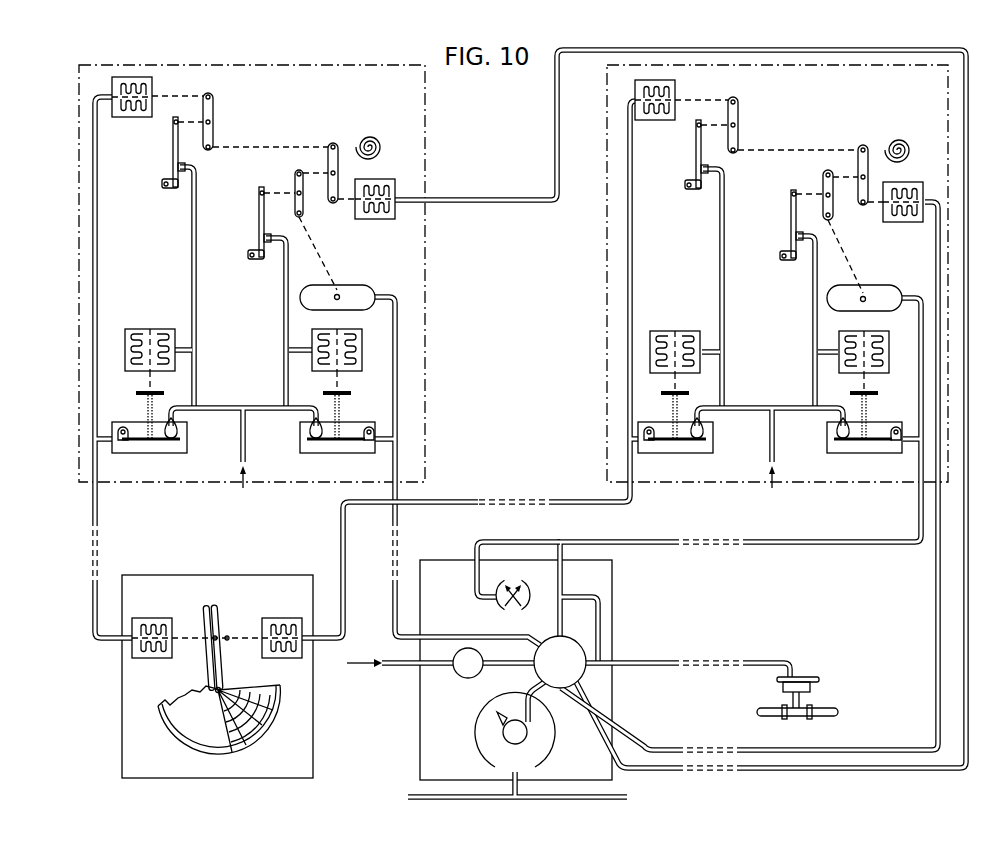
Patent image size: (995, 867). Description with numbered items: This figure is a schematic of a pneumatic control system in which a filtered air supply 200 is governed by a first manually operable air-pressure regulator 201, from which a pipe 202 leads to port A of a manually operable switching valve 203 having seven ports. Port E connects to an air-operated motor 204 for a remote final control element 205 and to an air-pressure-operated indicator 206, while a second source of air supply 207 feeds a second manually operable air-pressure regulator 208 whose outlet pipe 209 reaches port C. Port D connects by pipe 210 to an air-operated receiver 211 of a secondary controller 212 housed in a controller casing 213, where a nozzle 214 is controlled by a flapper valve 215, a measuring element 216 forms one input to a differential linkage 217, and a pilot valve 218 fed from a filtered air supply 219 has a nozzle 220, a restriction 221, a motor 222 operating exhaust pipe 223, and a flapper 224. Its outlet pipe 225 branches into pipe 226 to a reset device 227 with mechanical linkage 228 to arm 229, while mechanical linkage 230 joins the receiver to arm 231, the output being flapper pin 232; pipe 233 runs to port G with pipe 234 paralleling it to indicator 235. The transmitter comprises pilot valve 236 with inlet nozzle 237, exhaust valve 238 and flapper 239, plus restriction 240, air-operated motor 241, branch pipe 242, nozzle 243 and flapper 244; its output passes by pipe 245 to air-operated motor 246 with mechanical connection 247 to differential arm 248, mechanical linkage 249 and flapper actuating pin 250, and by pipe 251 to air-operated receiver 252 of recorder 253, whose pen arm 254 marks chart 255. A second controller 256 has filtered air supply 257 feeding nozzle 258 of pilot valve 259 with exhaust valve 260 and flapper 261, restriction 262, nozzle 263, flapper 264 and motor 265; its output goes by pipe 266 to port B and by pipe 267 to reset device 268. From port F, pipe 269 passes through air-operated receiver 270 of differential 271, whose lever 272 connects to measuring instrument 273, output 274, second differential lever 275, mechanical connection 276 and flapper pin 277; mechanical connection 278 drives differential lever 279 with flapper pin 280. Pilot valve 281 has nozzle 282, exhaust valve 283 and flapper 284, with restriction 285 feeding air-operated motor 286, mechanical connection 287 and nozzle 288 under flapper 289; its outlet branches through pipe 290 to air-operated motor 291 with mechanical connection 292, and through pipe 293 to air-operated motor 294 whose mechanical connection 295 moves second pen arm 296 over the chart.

The filtered air supply 200 is at (408, 662).
The first manually operable air-pressure regulator 201 is at (463, 653).
The pipe 202 is at (523, 650).
The switching valve 203 is at (572, 640).
The air-operated motor 204 is at (807, 677).
The final control element 205 is at (797, 723).
The air-pressure-operated indicator 206 is at (518, 585).
The second source of air supply 207 is at (512, 800).
The second manually operable air-pressure regulator 208 is at (507, 730).
The outlet pipe 209 is at (533, 690).
The pipe 210 is at (938, 245).
The air-operated receiver 211 is at (910, 182).
The secondary controller 212 is at (596, 262).
The controller casing 213 is at (607, 402).
The nozzle 214 is at (802, 242).
The flapper valve 215 is at (791, 210).
The measuring element 216 is at (897, 138).
The differential linkage 217 is at (847, 138).
The pilot valve 218 is at (873, 455).
The filtered air supply 219 is at (772, 443).
The nozzle 220 is at (836, 428).
The restriction 221 is at (813, 378).
The motor 222 is at (863, 328).
The exhaust pipe 223 is at (852, 403).
The flapper 224 is at (855, 442).
The outlet pipe 225 is at (913, 433).
The pipe 226 is at (920, 380).
The reset device 227 is at (882, 291).
The mechanical linkage 228 is at (855, 265).
The arm 229 is at (833, 205).
The mechanical linkage 230 is at (875, 205).
The arm 231 is at (869, 175).
The flapper pin 232 is at (807, 177).
The pipe 233 is at (662, 540).
The pipe 234 is at (522, 538).
The indicator 235 is at (500, 603).
The pilot valve 236 is at (670, 455).
The inlet nozzle 237 is at (704, 427).
The exhaust valve 238 is at (673, 407).
The flapper 239 is at (683, 442).
The restriction 240 is at (727, 380).
The air-operated motor 241 is at (682, 328).
The branch pipe 242 is at (725, 257).
The nozzle 243 is at (708, 174).
The flapper 244 is at (697, 150).
The pipe 245 is at (627, 355).
The air-operated motor 246 is at (670, 120).
The mechanical connection 247 is at (690, 98).
The differential arm 248 is at (740, 110).
The mechanical linkage 249 is at (753, 148).
The flapper actuating pin 250 is at (703, 128).
The pipe 251 is at (565, 500).
The air-operated receiver 252 is at (283, 617).
The recorder 253 is at (215, 568).
The pointer or pen arm 254 is at (224, 623).
The chart 255 is at (187, 727).
The second controller 256 is at (72, 247).
The filtered air supply 257 is at (245, 435).
The nozzle 258 is at (307, 423).
The pilot valve or relay 259 is at (340, 453).
The exhaust valve 260 is at (341, 403).
The flapper 261 is at (333, 453).
The restriction 262 is at (285, 378).
The nozzle 263 is at (270, 248).
The flapper 264 is at (259, 203).
The motor 265 is at (337, 328).
The pipe 266 is at (397, 468).
The pipe 267 is at (397, 355).
The reset device 268 is at (352, 280).
The pipe 269 is at (555, 100).
The air-operated receiver 270 is at (392, 178).
The differential 271 is at (315, 132).
The lever 272 is at (338, 182).
The measuring instrument 273 is at (362, 140).
The output 274 is at (318, 172).
The second differential lever 275 is at (305, 203).
The mechanical connection 276 is at (318, 251).
The flapper pin 277 is at (267, 187).
The mechanical connection 278 is at (262, 143).
The differential lever 279 is at (213, 100).
The flapper pin 280 is at (180, 126).
The pilot valve 281 is at (142, 455).
The nozzle 282 is at (178, 424).
The exhaust valve 283 is at (147, 405).
The flapper 284 is at (163, 442).
The restriction 285 is at (197, 380).
The air-operated motor 286 is at (142, 327).
The mechanical connection 287 is at (147, 380).
The nozzle 288 is at (183, 172).
The flapper 289 is at (172, 145).
The pipe 290 is at (93, 287).
The air-operated motor 291 is at (142, 117).
The mechanical connection 292 is at (180, 94).
The pipe 293 is at (92, 493).
The air-operated motor 294 is at (158, 617).
The mechanical connection 295 is at (185, 636).
The second indicator or pen arm 296 is at (216, 663).